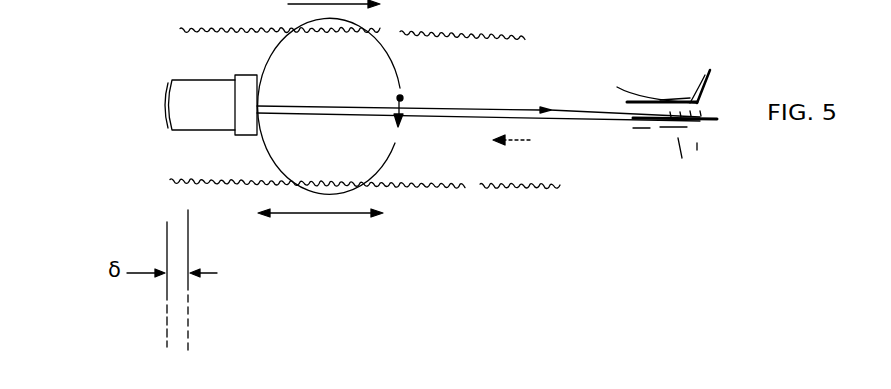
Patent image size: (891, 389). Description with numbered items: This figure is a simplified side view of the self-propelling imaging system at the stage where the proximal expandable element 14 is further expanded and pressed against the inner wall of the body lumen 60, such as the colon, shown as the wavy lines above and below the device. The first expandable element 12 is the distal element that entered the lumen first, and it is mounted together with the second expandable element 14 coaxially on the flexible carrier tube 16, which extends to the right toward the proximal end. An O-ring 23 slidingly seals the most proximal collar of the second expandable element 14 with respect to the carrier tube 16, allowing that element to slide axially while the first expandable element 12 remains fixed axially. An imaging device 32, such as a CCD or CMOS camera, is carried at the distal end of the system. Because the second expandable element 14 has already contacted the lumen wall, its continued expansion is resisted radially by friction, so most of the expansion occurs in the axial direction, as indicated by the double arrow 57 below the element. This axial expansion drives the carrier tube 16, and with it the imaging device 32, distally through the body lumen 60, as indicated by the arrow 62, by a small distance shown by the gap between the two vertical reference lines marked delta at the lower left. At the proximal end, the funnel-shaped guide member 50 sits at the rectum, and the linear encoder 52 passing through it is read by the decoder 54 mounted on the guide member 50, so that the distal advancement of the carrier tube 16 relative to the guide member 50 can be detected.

The first outwardly expandable element 12 is at (210, 92).
The second outwardly expandable element 14 is at (384, 60).
The carrier tube 16 is at (494, 108).
The O-ring 23 is at (403, 97).
The imaging device 32 is at (163, 100).
The guide member 50 is at (700, 80).
The linear encoder 52 is at (712, 112).
The decoder 54 is at (662, 98).
The double arrow 57 is at (330, 217).
The body lumen 60 is at (182, 32).
The arrow 62 is at (530, 140).